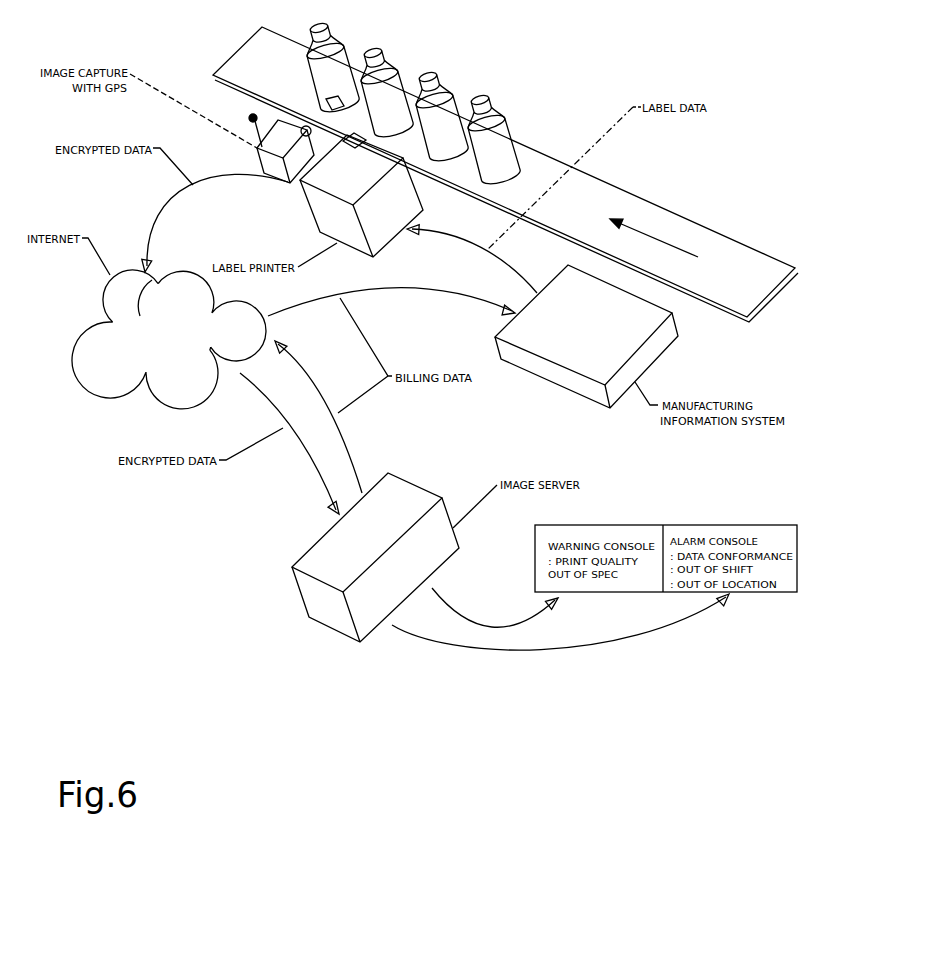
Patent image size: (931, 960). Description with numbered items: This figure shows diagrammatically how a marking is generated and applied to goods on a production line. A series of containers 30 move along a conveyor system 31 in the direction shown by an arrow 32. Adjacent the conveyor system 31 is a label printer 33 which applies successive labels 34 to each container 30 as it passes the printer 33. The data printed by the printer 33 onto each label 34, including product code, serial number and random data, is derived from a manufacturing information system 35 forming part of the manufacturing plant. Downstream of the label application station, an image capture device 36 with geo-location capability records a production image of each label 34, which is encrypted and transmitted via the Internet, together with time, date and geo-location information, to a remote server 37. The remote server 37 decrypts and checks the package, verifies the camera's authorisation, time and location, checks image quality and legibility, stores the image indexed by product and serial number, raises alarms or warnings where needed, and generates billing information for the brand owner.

The containers 30 is at (432, 82).
The conveyor system 31 is at (757, 253).
The arrow 32 is at (657, 238).
The label printer 33 is at (355, 197).
The labels 34 is at (328, 100).
The manufacturing information system 35 is at (590, 345).
The image capture device with GPS 36 is at (270, 166).
The remote server 37 is at (330, 618).